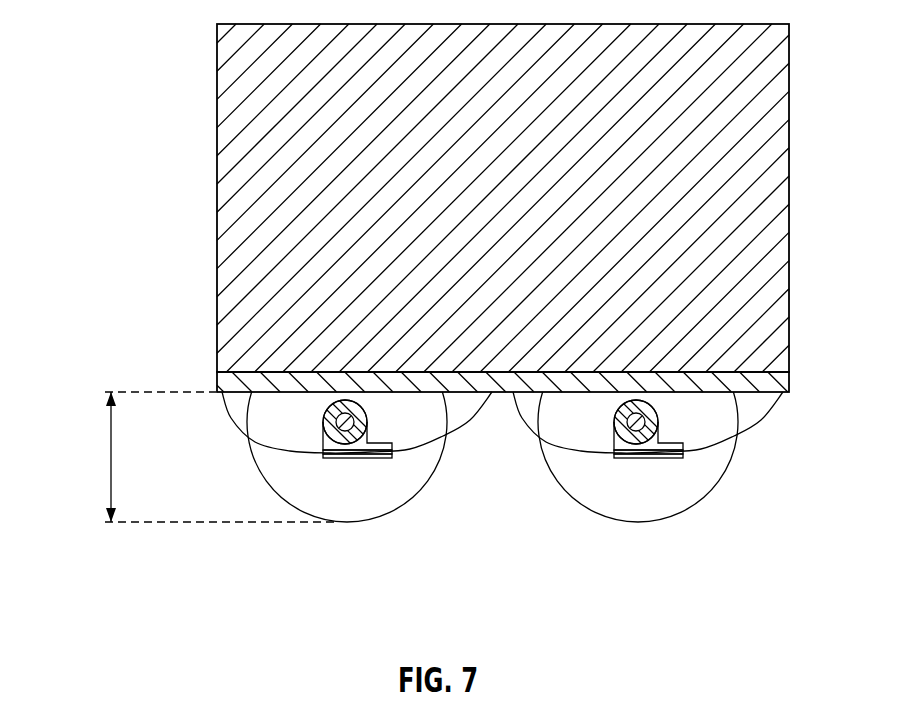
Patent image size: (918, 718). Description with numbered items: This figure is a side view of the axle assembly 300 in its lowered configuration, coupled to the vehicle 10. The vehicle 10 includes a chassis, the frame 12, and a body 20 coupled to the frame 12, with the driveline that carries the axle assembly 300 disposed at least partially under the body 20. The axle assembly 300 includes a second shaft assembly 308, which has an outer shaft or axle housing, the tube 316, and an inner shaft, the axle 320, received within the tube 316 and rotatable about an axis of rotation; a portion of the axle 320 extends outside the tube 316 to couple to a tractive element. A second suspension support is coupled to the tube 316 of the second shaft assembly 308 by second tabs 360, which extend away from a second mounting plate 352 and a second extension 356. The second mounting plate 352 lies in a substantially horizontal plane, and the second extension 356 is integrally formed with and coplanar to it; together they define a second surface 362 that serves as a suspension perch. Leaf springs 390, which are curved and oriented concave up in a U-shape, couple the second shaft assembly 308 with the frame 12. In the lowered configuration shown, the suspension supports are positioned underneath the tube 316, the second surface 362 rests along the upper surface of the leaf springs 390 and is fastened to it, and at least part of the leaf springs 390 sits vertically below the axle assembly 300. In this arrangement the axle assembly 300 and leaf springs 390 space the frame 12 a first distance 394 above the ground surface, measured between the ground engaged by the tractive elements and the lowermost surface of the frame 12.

The vehicle 10 is at (174, 156).
The body 20 is at (216, 90).
The frame 12 is at (225, 383).
The axle assembly 300 is at (391, 521).
The second shaft assembly 308 is at (316, 417).
The tube 316 is at (366, 430).
The axle 320 is at (340, 424).
The second mounting plate 352 is at (328, 455).
The second extension 356 is at (435, 470).
The second tabs 360 is at (323, 442).
The second surface 362 is at (355, 458).
The leaf springs 390 is at (520, 412).
The first distance 394 is at (111, 445).